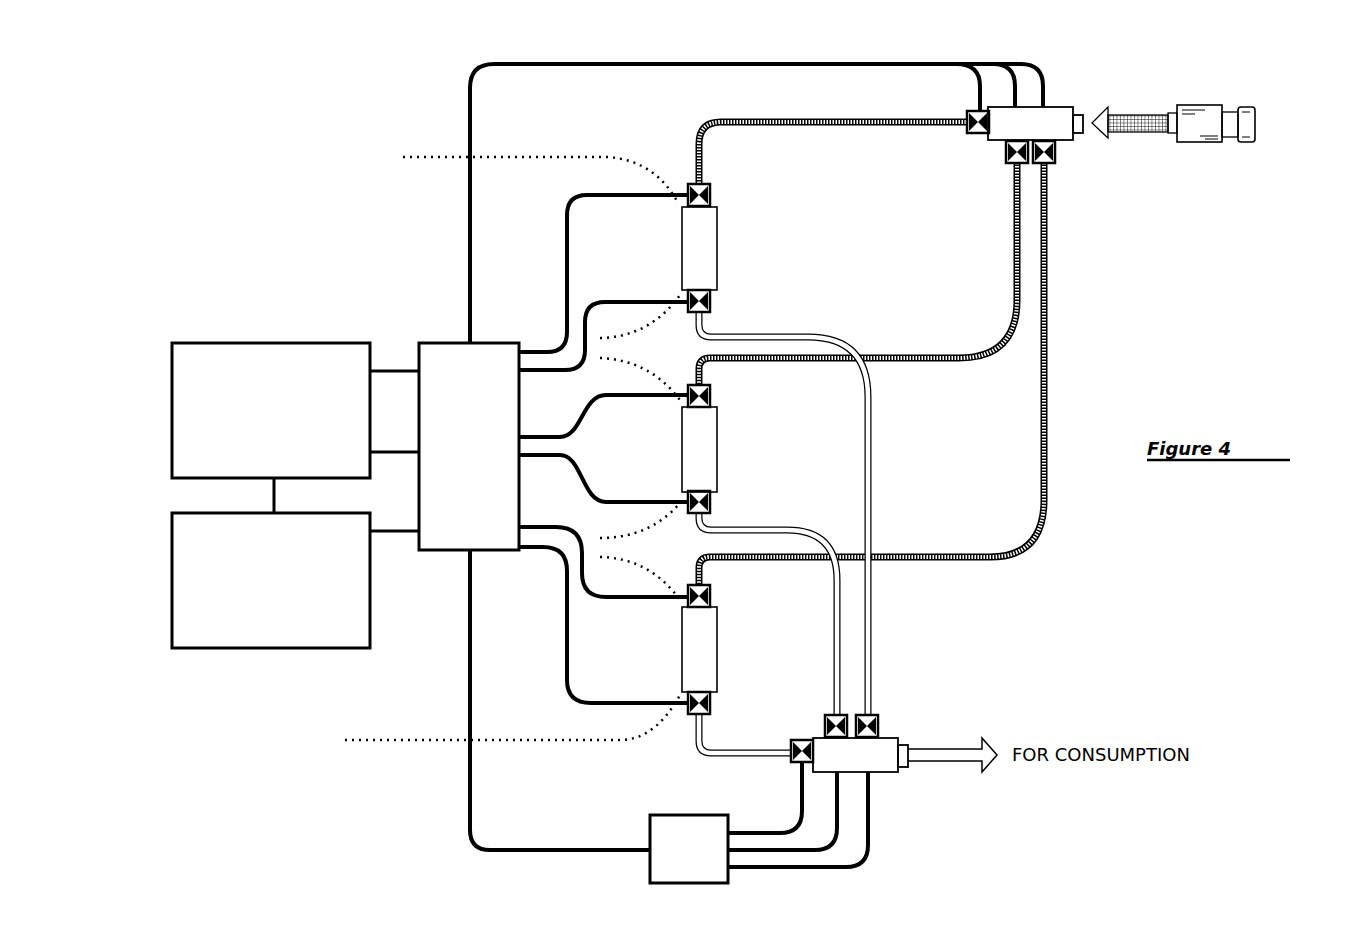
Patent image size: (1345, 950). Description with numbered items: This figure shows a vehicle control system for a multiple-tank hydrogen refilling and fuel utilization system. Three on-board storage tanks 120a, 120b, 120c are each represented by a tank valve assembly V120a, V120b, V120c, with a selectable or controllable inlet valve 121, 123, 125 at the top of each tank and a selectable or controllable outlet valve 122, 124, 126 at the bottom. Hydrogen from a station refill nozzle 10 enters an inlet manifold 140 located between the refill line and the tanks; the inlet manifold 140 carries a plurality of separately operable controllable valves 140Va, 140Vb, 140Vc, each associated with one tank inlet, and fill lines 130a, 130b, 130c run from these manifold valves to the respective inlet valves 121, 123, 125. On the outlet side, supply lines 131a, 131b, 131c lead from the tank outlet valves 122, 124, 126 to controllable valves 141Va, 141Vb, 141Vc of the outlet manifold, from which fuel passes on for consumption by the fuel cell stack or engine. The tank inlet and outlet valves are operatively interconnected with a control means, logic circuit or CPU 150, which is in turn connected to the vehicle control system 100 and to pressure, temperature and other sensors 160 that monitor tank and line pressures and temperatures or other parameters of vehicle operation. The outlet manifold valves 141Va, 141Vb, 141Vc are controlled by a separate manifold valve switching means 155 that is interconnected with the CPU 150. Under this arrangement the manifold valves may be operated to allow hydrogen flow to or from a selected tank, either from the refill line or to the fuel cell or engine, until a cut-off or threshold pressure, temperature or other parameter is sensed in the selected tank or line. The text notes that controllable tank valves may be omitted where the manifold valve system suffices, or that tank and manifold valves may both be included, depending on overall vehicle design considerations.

The station refill nozzle 10 is at (1196, 142).
The vehicle control system 100 is at (274, 343).
The pressure, temperature and other sensors 160 is at (274, 648).
The control means, logic circuit, or CPU 150 is at (469, 446).
The manifold valve switching means 155 is at (689, 849).
The tank 120a is at (543, 258).
The tank 120b is at (612, 463).
The tank 120c is at (543, 661).
The first tank valve assembly V120a is at (718, 248).
The second tank valve assembly V120b is at (705, 447).
The third tank valve assembly V120c is at (718, 650).
The inlet valve 121 is at (714, 198).
The outlet valve 122 is at (714, 300).
The inlet valve 123 is at (714, 398).
The outlet valve 124 is at (714, 500).
The inlet valve 125 is at (714, 597).
The outlet valve 126 is at (714, 703).
The first fill line 130a is at (797, 128).
The second fill line 130b is at (1008, 240).
The third fill line 130c is at (1050, 347).
The first supply line 131a is at (872, 407).
The second supply line 131b is at (842, 632).
The third supply line 131c is at (698, 757).
The inlet manifold 140 is at (1055, 106).
The controllable valve 140Va is at (968, 128).
The controllable valve 140Vb is at (1005, 158).
The controllable valve 140Vc is at (1057, 166).
The controllable valve 141Va is at (879, 723).
The controllable valve 141Vb is at (847, 716).
The controllable valve 141Vc is at (793, 763).